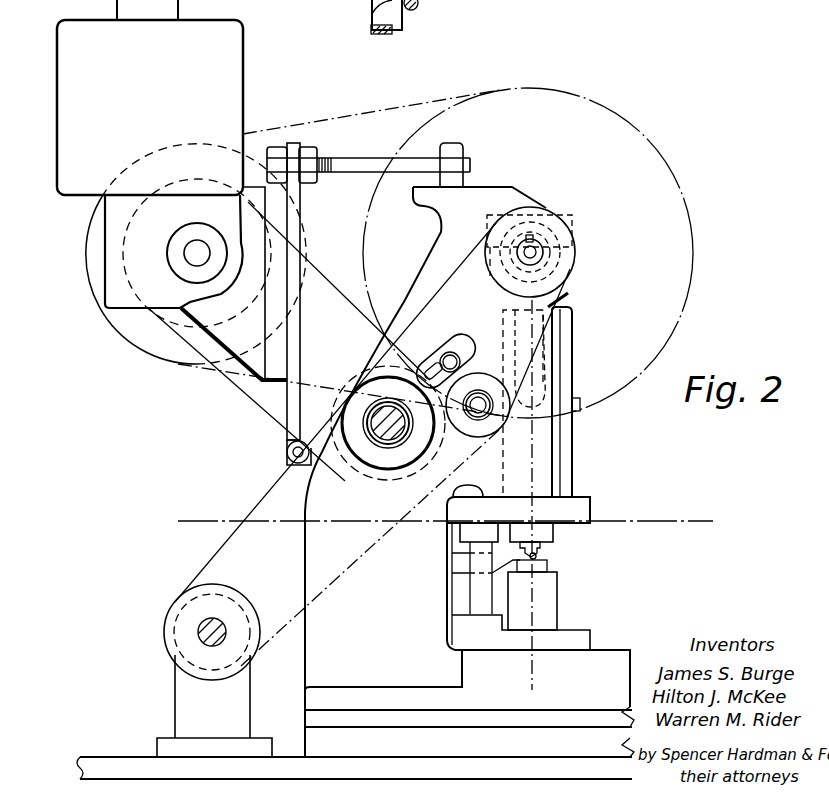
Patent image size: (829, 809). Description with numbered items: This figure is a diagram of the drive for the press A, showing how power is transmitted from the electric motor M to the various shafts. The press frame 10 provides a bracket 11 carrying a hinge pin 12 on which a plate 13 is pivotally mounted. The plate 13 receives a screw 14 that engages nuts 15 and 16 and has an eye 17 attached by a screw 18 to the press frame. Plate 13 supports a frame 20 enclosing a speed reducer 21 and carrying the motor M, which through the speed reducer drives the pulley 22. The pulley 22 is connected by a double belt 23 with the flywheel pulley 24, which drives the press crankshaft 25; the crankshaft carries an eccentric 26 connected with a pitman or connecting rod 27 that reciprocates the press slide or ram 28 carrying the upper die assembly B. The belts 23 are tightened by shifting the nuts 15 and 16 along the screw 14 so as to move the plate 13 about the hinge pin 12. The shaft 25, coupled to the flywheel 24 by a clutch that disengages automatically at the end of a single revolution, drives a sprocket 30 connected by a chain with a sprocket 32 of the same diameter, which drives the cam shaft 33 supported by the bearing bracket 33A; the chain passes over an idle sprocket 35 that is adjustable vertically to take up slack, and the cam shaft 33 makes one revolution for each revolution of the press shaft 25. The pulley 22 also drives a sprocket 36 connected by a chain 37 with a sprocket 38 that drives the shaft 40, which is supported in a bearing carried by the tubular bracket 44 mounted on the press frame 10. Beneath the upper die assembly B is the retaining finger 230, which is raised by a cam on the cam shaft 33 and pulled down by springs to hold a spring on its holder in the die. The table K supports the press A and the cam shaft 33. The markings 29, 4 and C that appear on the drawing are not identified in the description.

The electric motor M is at (244, 28).
The frame 10 is at (421, 285).
The bracket 11 is at (298, 438).
The hinge pin 12 is at (292, 452).
The plate 13 is at (300, 218).
The screw 14 is at (379, 158).
The nut 15 is at (273, 156).
The nut 16 is at (313, 154).
The eye 17 is at (472, 166).
The screw 18 is at (455, 143).
The frame 20 is at (207, 343).
The speed reducer 21 is at (199, 253).
The pulley 22 is at (120, 333).
The double belt 23 is at (384, 114).
The flywheel pulley 24 is at (641, 148).
The press crankshaft 25 is at (542, 252).
The eccentric 26 is at (542, 245).
The pitman or connecting rod 27 is at (548, 296).
The press slide or ram 28 is at (577, 374).
The section line 29 is at (181, 486).
The sprocket 30 is at (500, 287).
The sprocket 32 is at (242, 599).
The cam shaft 33 is at (226, 626).
The bearing bracket 33A is at (175, 683).
The idle sprocket 35 is at (479, 438).
The sprocket 36 is at (238, 316).
The chain 37 is at (271, 393).
The sprocket 38 is at (378, 463).
The shaft 40 is at (371, 451).
The tubular bracket 44 is at (393, 456).
The retaining finger 230 is at (538, 555).
The section line 4 is at (540, 485).
The press A is at (512, 187).
The upper die assembly B is at (596, 497).
The base unit C is at (590, 627).
The table K is at (354, 756).